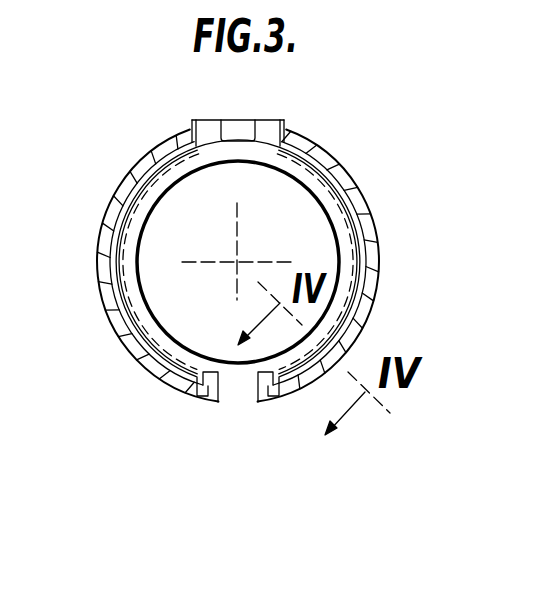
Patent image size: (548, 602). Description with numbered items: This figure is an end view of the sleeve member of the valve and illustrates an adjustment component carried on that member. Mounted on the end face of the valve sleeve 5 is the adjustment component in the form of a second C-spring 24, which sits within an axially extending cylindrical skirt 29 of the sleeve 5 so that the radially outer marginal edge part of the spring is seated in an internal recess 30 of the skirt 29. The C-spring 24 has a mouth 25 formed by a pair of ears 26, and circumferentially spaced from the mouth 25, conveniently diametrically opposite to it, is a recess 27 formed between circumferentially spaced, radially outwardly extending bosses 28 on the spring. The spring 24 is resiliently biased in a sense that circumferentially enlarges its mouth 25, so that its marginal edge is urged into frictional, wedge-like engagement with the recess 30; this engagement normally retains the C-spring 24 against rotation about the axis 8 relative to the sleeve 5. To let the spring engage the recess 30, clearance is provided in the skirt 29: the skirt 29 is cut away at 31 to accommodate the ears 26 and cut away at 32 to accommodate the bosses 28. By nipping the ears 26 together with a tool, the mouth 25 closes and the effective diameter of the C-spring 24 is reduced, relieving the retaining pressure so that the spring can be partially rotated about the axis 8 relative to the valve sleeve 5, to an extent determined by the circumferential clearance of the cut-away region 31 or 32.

The sleeve 5 is at (143, 161).
The axis 8 is at (236, 257).
The second C-spring 24 is at (133, 303).
The mouth 25 is at (241, 386).
The ears 26 is at (218, 398).
The recess 27 is at (232, 140).
The bosses 28 is at (212, 128).
The cylindrical skirt 29 is at (108, 222).
The internal recess 30 is at (363, 285).
The cut-away 31 is at (197, 394).
The cut-away 32 is at (186, 128).